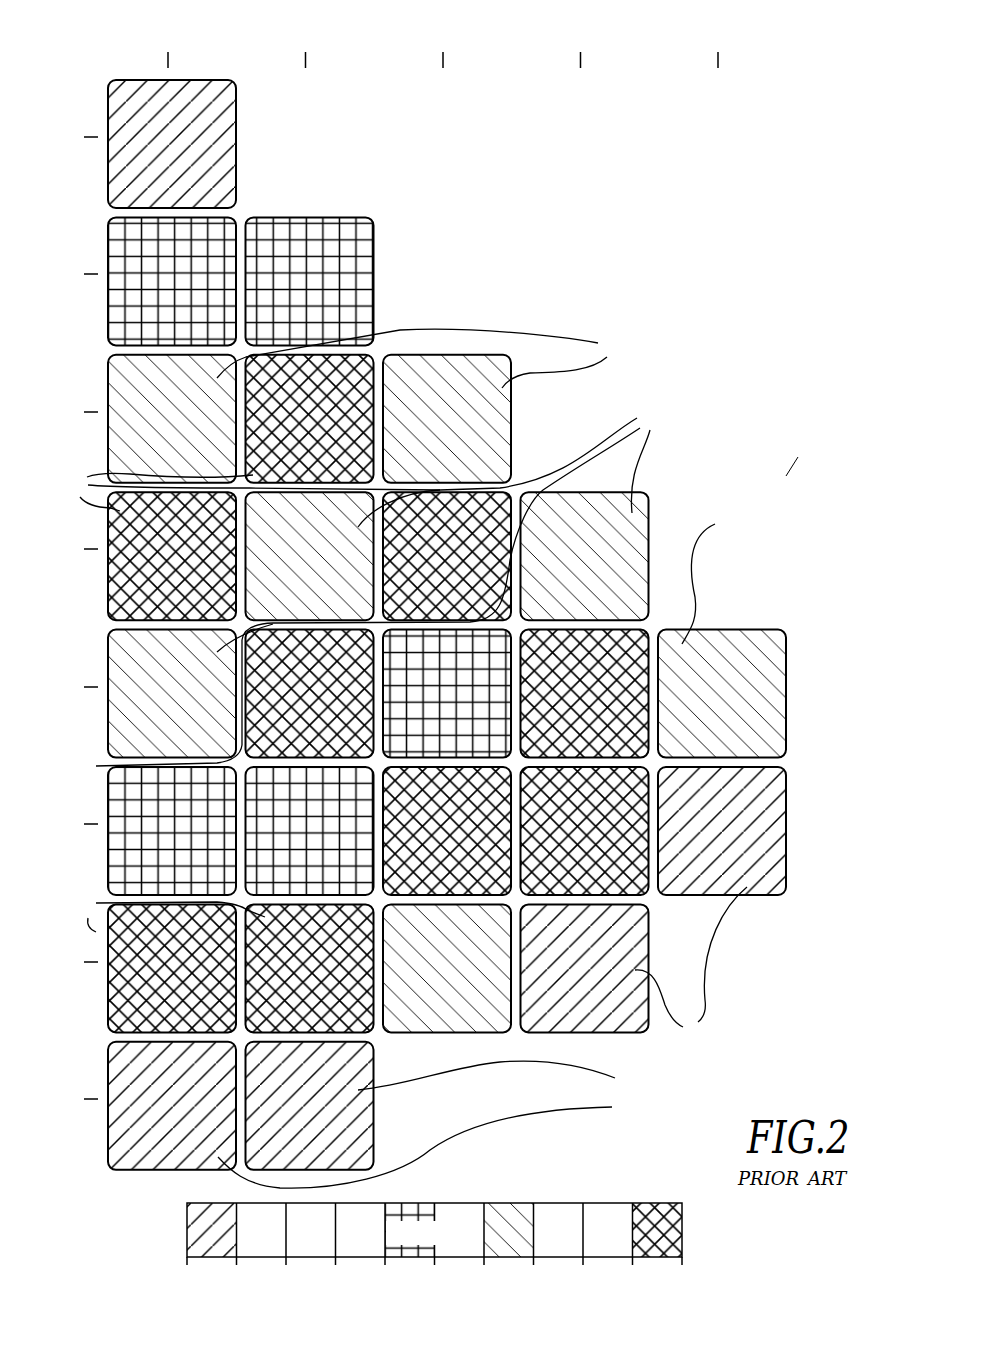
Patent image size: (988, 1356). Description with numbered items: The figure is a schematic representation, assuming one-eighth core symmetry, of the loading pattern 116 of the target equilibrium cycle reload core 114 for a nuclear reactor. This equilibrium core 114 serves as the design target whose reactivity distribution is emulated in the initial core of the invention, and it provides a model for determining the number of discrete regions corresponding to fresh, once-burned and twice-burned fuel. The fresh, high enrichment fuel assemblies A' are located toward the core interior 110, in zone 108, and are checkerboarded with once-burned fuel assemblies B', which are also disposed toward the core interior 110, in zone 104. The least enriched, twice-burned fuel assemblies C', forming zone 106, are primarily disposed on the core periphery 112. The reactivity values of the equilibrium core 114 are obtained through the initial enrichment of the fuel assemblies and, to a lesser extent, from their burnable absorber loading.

The zone 104 is at (597, 302).
The zone 106 is at (706, 1018).
The zone 108 is at (62, 938).
The core interior 110 is at (118, 70).
The core periphery 112 is at (147, 1180).
The equilibrium cycle reload core 114 is at (506, 214).
The loading pattern 116 is at (786, 476).